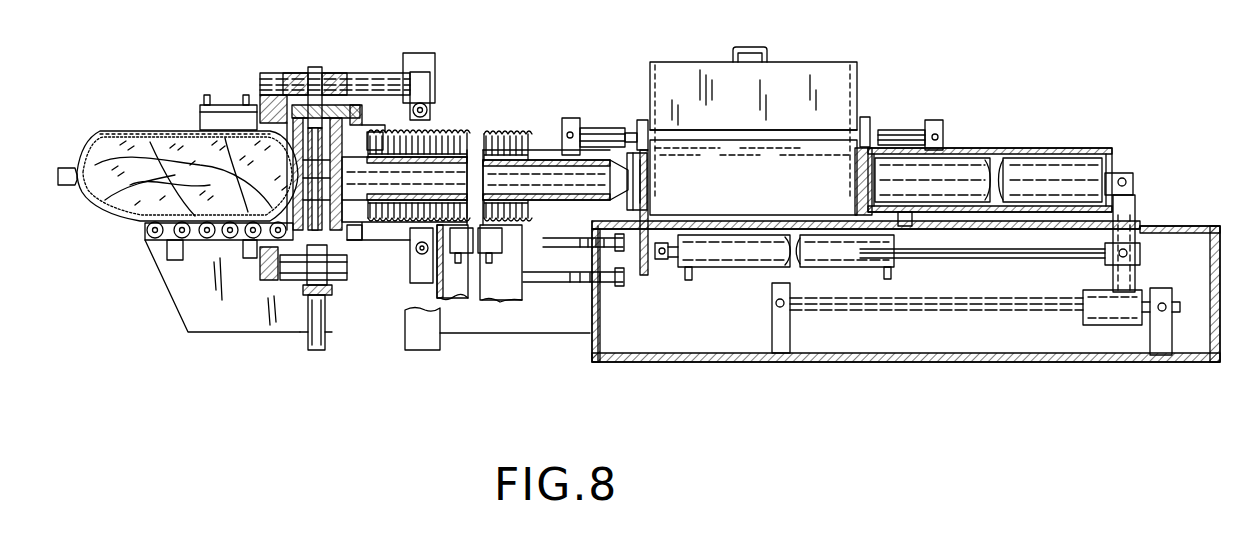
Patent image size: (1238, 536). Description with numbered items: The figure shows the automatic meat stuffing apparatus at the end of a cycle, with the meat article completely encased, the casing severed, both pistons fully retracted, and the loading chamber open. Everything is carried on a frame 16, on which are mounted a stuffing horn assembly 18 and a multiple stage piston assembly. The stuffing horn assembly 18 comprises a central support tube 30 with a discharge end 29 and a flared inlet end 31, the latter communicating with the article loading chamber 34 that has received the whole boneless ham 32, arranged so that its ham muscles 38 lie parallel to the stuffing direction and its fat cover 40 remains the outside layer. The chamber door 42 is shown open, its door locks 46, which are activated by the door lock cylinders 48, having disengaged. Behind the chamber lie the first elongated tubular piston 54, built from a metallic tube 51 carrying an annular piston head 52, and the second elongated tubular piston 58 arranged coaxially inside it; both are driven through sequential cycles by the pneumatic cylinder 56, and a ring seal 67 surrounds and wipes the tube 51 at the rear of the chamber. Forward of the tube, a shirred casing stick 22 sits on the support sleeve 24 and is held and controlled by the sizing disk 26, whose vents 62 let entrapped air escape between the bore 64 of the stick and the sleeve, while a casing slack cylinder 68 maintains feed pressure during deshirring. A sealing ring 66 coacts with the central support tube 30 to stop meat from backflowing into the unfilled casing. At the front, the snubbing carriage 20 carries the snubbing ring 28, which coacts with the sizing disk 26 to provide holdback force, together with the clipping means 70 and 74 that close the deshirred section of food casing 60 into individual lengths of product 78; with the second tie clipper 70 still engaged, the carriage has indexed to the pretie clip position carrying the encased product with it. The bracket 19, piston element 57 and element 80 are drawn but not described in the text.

The frame 16 is at (222, 250).
The stuffing horn assembly 18 is at (512, 113).
The bracket 19 is at (1130, 207).
The snubbing carriage 20 is at (326, 66).
The shirred casing stick 22 is at (472, 122).
The support sleeve 24 is at (467, 200).
The sizing disk 26 is at (373, 220).
The snubbing ring 28 is at (358, 120).
The discharge end 29 is at (253, 257).
The central support tube 30 is at (542, 160).
The flared inlet end 31 is at (608, 196).
The whole boneless ham 32 is at (143, 150).
The article loading chamber 34 is at (678, 148).
The ham muscles 38 is at (100, 205).
The fat cover 40 is at (105, 129).
The door 42 is at (793, 75).
The meat loading chamber door locks 46 is at (640, 125).
The loading chamber door lock cylinders 48 is at (590, 130).
The metallic tube 51 is at (1040, 133).
The annular piston head 52 is at (875, 228).
The first elongated tubular piston 54 is at (972, 148).
The pneumatic cylinder 56 is at (723, 262).
The piston 57 is at (1058, 170).
The second elongated tubular piston 58 is at (852, 182).
The deshirred section of food casing 60 is at (348, 135).
The vents 62 is at (428, 130).
The bore 64 is at (535, 132).
The sealing ring 66 is at (300, 255).
The ring seal 67 is at (906, 214).
The casing slack cylinder 68 is at (486, 256).
The clipping means 70 is at (303, 107).
The clipping means 74 is at (355, 87).
The product 78 is at (174, 131).
The clamp 80 is at (222, 105).